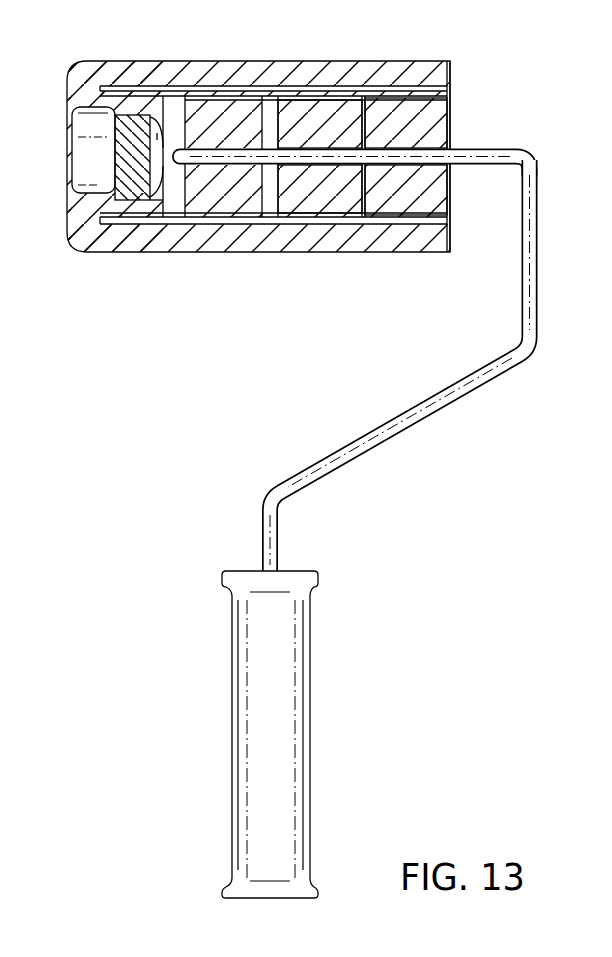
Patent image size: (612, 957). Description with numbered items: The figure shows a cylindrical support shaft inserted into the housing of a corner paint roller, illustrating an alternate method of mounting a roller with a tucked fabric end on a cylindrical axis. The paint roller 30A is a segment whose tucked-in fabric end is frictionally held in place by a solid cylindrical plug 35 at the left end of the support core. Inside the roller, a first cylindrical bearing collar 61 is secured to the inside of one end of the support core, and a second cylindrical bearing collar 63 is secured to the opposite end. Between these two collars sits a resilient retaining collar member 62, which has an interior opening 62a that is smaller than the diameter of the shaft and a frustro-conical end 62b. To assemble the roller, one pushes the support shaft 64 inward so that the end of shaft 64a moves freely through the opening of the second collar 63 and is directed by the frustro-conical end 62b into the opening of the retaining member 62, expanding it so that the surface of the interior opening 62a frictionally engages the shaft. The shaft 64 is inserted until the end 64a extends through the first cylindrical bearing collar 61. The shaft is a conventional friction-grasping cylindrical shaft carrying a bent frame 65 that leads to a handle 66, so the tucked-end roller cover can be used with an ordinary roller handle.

The paint roller 30A is at (305, 68).
The cylindrical plug 35 is at (120, 163).
The first cylindrical bearing collar 61 is at (213, 200).
The resilient retaining collar member 62 is at (303, 203).
The interior opening 62a is at (312, 140).
The frustro-conical end 62b is at (386, 108).
The second cylindrical bearing collar 63 is at (435, 112).
The support shaft 64 is at (460, 152).
The end of shaft 64a is at (153, 117).
The frame 65 is at (533, 263).
The handle 66 is at (247, 706).